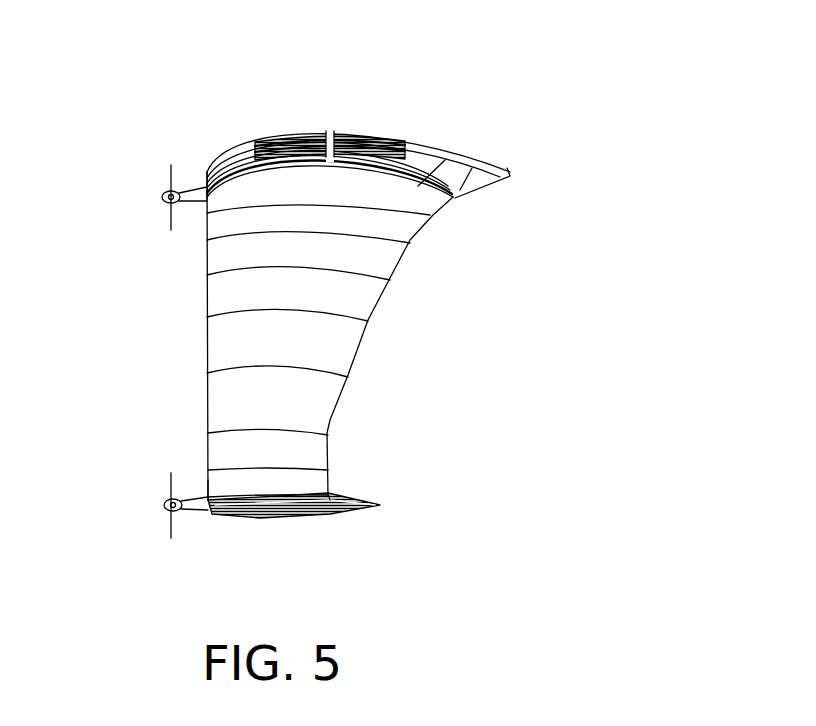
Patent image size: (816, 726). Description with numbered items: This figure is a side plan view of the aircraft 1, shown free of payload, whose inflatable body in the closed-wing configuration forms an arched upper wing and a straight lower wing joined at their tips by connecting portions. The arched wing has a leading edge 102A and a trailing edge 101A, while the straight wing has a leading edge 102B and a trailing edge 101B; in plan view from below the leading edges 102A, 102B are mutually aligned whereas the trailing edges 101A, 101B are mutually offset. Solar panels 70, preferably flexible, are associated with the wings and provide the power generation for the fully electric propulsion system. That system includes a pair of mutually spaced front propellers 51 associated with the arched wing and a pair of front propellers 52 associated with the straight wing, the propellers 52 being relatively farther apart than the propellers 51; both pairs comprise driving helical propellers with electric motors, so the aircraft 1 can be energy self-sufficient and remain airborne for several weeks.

The aircraft 1 is at (357, 276).
The front propellers 51 is at (126, 182).
The front propellers 52 is at (146, 496).
The solar panels 70 is at (284, 136).
The trailing edge 101A is at (507, 172).
The trailing edge 101B is at (343, 493).
The leading edge 102A is at (207, 180).
The leading edge 102B is at (207, 495).